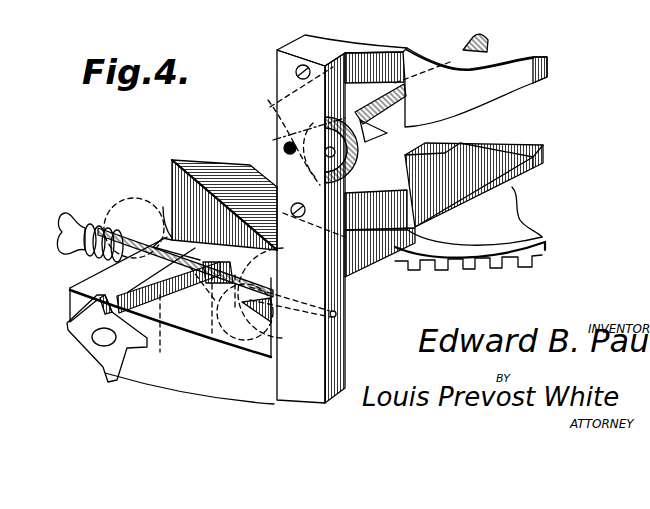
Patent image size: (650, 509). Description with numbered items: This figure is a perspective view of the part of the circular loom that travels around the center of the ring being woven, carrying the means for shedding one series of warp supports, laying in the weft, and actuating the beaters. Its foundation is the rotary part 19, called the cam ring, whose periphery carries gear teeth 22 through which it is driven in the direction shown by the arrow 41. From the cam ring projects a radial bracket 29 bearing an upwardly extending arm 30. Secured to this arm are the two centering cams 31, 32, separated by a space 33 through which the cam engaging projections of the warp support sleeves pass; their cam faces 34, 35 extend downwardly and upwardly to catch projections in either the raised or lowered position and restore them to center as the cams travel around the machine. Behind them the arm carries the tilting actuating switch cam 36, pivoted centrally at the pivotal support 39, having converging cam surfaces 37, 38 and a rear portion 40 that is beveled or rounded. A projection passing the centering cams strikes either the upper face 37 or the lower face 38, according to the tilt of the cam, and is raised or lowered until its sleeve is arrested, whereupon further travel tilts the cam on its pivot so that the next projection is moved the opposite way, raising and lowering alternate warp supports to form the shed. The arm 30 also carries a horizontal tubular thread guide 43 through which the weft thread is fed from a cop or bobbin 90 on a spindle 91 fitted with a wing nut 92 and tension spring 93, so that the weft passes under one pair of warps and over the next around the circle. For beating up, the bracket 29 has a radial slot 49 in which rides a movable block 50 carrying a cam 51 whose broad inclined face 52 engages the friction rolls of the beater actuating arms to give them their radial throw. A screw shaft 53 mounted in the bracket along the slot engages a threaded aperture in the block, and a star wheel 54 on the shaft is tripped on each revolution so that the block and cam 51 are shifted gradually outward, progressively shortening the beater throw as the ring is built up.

The rotary part 19 is at (495, 207).
The gear teeth 22 is at (523, 262).
The bracket 29 is at (70, 293).
The arm 30 is at (336, 314).
The centering cam 31 is at (500, 77).
The centering cam 32 is at (510, 172).
The space 33 is at (510, 150).
The cam face 34 is at (438, 133).
The cam face 35 is at (512, 158).
The tilting actuating switch cam 36 is at (390, 123).
The cam surface 37 is at (360, 112).
The cam surface 38 is at (366, 142).
The pivotal support 39 is at (327, 156).
The rear portion of the cam 40 is at (277, 107).
The arrow 41 is at (275, 412).
The tubular thread guide 43 is at (482, 44).
The radial slot 49 is at (105, 265).
The block 50 is at (163, 218).
The cam 51 is at (183, 183).
The inclined face 52 is at (210, 170).
The screw shaft 53 is at (183, 285).
The star wheel 54 is at (102, 368).
The bobbin 90 is at (215, 360).
The spindle 91 is at (336, 316).
The wing nut 92 is at (63, 230).
The tension spring 93 is at (107, 230).